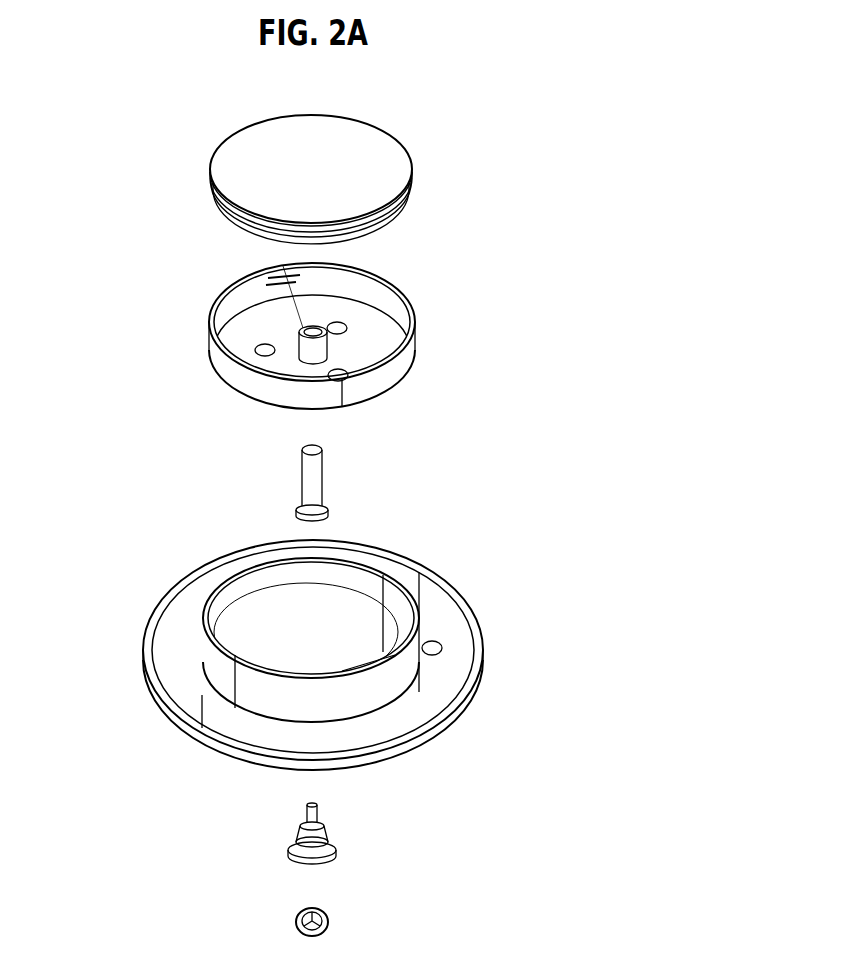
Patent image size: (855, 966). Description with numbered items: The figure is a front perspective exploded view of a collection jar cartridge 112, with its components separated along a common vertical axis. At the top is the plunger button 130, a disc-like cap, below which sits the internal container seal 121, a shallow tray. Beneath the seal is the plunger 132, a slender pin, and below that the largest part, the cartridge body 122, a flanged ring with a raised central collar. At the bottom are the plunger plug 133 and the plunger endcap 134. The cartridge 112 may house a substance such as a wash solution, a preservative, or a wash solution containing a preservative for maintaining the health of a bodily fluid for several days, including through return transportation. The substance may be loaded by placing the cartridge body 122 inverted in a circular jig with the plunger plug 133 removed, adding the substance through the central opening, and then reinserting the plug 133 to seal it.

The collection jar cartridge 112 is at (182, 238).
The plunger button 130 is at (365, 170).
The internal container seal 121 is at (370, 342).
The plunger 132 is at (328, 497).
The cartridge body 122 is at (397, 570).
The plunger plug 133 is at (340, 832).
The plunger endcap 134 is at (340, 912).